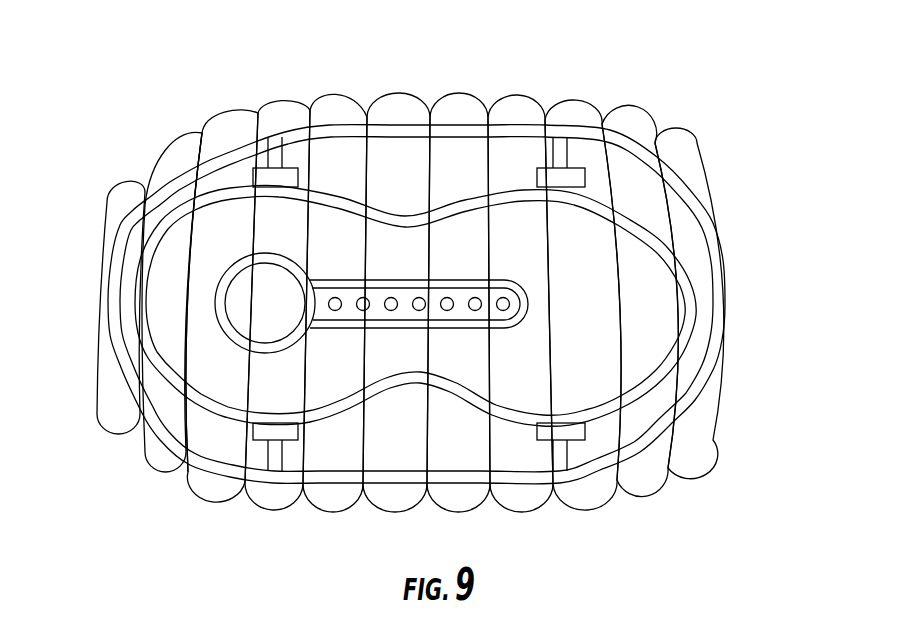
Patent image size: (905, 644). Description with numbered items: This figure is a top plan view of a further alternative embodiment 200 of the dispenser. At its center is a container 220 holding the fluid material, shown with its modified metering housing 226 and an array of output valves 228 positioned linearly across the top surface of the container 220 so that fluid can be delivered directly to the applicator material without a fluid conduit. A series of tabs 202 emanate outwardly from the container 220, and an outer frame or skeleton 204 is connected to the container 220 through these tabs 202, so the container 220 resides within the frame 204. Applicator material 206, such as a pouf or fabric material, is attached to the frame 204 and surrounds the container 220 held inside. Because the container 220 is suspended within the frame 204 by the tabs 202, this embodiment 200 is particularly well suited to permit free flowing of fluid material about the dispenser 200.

The alternative embodiment 200 is at (410, 295).
The tabs 202 is at (198, 484).
The outer frame 204 is at (685, 418).
The applicator material 206 is at (165, 420).
The container 220 is at (520, 178).
The metering housing 226 is at (303, 266).
The output valves 228 is at (391, 304).